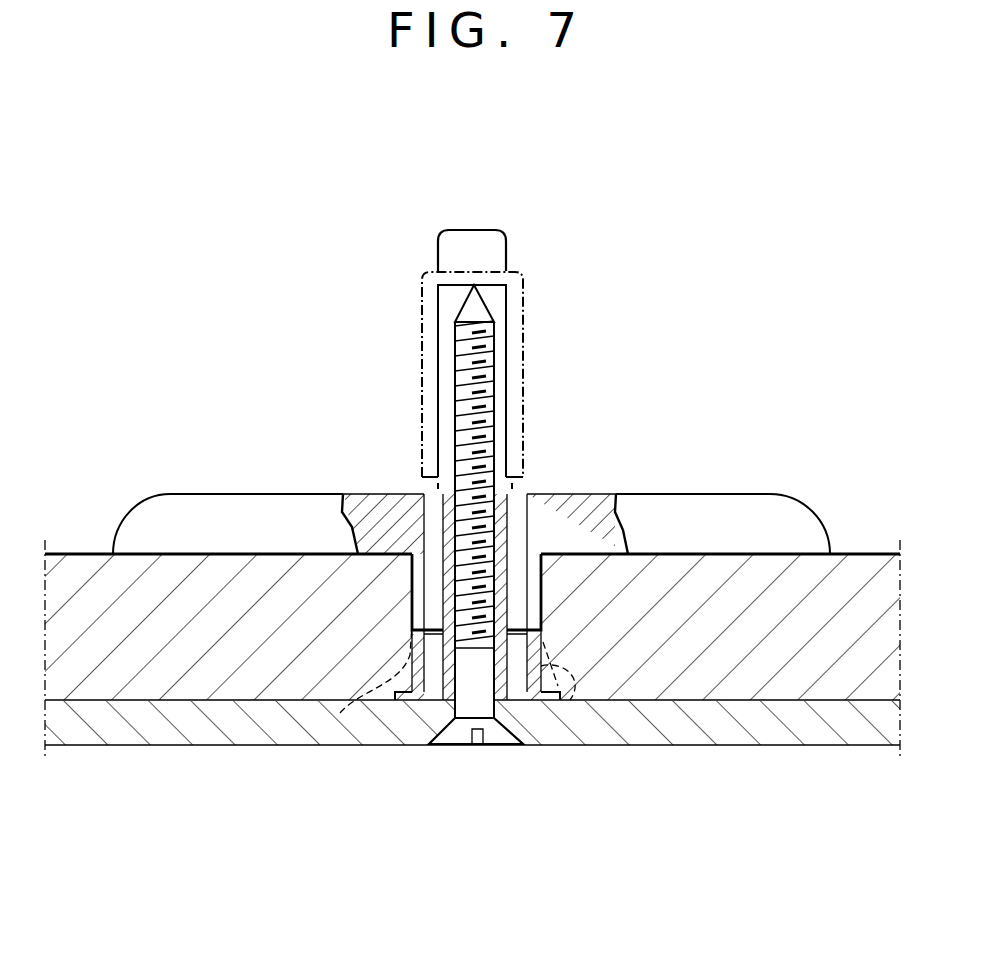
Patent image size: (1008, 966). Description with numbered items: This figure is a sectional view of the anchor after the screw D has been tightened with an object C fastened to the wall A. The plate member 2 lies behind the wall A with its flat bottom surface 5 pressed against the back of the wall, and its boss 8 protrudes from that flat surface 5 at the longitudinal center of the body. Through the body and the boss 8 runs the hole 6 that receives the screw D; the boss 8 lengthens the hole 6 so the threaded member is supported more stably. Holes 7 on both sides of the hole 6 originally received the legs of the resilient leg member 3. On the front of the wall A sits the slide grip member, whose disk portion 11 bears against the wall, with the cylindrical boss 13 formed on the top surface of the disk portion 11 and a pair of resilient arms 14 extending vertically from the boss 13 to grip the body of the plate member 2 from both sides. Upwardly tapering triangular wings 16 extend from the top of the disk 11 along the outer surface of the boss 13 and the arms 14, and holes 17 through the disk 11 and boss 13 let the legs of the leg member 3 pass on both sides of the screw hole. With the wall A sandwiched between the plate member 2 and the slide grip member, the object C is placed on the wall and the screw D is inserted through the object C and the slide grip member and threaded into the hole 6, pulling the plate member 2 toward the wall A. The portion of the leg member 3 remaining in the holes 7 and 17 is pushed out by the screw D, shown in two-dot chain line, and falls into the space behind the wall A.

The plate member 2 is at (708, 510).
The resilient leg member 3 is at (530, 320).
The flat bottom surface 5 is at (189, 563).
The hole 6 is at (460, 508).
The holes 7 is at (428, 522).
The boss 8 is at (413, 600).
The disk portion 11 is at (404, 702).
The cylindrical boss 13 is at (543, 666).
The resilient arms 14 is at (466, 245).
The triangular wings 16 is at (340, 713).
The holes 17 is at (435, 690).
The wall A is at (862, 574).
The object C is at (726, 733).
The screw D is at (474, 704).